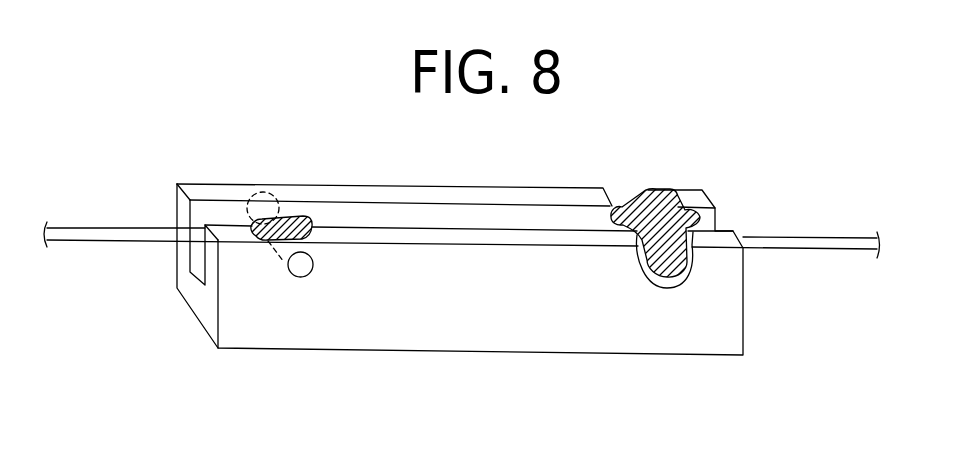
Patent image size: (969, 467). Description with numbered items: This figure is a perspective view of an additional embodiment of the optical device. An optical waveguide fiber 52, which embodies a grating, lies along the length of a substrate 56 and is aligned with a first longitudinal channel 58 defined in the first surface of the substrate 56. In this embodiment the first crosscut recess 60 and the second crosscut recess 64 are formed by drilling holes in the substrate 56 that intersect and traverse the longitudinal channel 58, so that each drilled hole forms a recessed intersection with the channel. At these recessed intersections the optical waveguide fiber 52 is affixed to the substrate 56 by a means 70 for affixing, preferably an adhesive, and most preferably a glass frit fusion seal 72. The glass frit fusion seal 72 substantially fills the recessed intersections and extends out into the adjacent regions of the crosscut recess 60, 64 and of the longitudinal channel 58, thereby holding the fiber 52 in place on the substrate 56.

The optical waveguide fiber 52 is at (83, 224).
The substrate 56 is at (468, 185).
The first longitudinal channel 58 is at (196, 254).
The first crosscut recess 60 is at (304, 280).
The second crosscut recess 64 is at (670, 278).
The means for affixing 70 is at (317, 212).
The glass frit fusion seal 72 is at (661, 189).